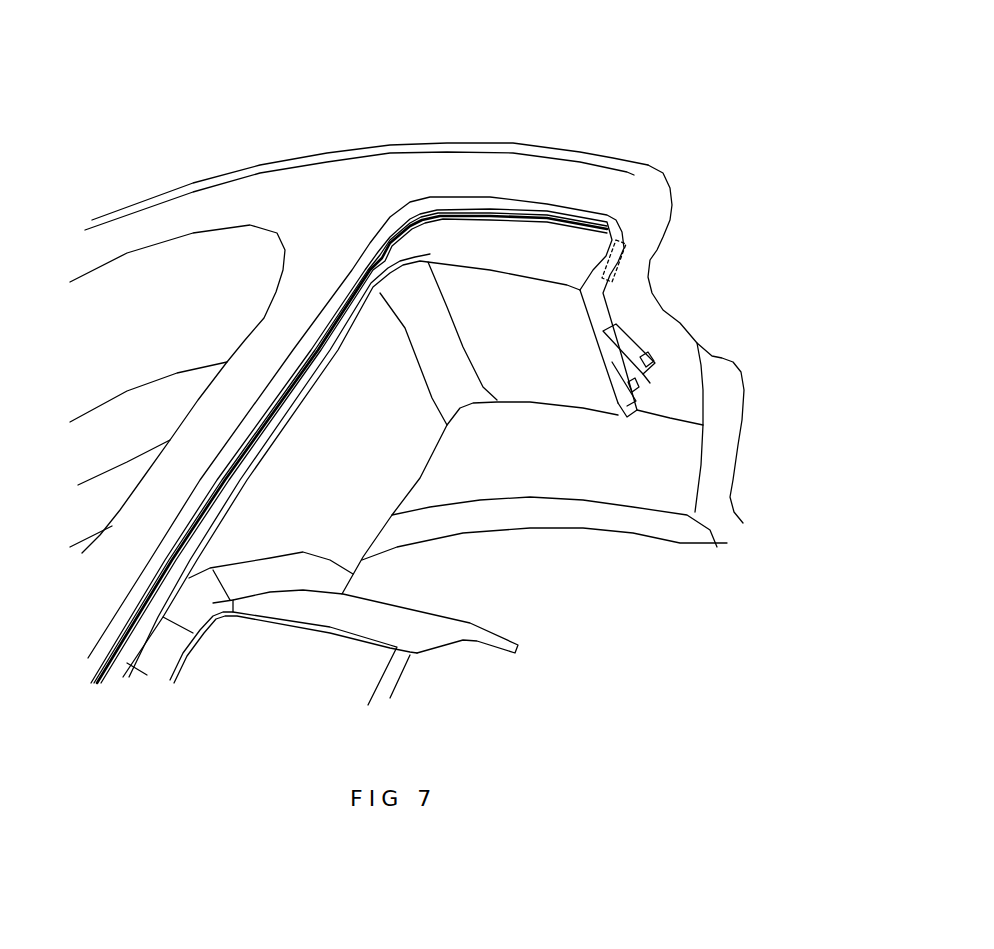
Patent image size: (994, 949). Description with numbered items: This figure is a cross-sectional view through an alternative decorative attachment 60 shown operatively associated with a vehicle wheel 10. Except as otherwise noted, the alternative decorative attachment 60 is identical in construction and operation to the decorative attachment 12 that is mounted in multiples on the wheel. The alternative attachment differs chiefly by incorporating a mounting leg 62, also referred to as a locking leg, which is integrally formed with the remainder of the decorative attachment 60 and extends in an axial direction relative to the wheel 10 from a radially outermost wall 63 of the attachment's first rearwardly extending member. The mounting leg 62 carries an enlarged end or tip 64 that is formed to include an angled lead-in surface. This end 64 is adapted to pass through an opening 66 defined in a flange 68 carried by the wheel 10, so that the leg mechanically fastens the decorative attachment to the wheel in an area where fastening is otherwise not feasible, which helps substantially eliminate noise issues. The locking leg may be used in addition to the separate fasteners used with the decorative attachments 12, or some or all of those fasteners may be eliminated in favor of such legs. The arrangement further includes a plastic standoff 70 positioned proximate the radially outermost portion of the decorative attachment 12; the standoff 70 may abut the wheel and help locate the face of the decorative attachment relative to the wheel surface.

The vehicle wheel 10 is at (424, 310).
The decorative attachment 12 is at (362, 466).
The alternative decorative attachment 60 is at (514, 457).
The mounting leg 62 is at (697, 301).
The radially outermost wall 63 is at (654, 472).
The enlarged end or tip 64 is at (727, 365).
The opening 66 is at (735, 403).
The flange 68 is at (732, 323).
The plastic standoff 70 is at (702, 224).